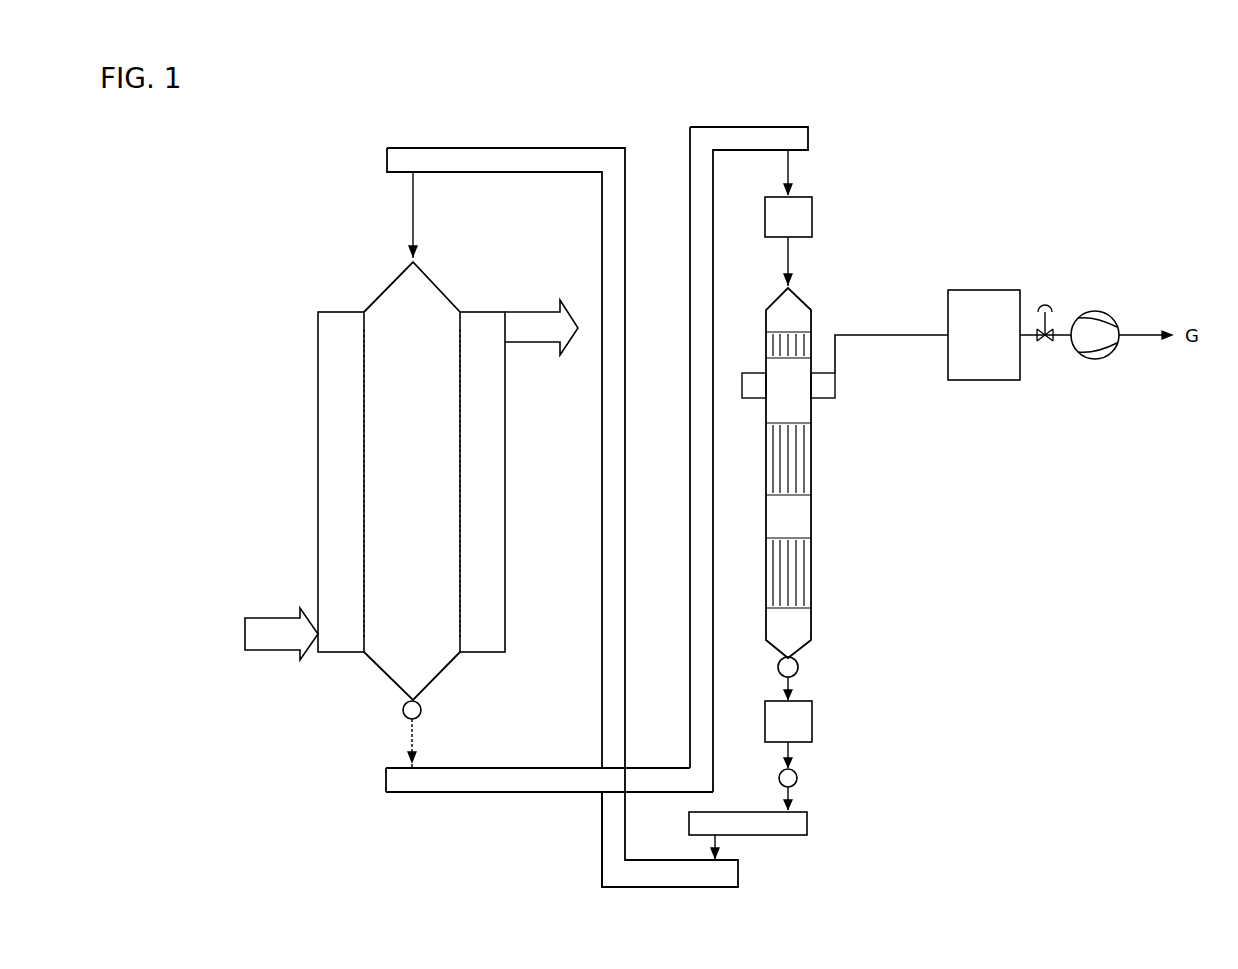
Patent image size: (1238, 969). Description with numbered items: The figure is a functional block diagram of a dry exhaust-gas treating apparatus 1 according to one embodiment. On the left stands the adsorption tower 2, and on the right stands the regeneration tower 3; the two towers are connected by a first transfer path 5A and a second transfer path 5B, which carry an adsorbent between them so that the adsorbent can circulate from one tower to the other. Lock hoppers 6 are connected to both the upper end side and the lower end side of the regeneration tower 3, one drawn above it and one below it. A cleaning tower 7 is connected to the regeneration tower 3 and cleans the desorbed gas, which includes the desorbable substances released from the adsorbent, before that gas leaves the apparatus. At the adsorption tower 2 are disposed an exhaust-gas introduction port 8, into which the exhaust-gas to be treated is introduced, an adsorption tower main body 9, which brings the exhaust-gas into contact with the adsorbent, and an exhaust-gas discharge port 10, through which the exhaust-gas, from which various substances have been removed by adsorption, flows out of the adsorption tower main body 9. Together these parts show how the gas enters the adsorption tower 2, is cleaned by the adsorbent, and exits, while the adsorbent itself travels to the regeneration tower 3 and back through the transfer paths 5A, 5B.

The dry exhaust-gas treating apparatus 1 is at (346, 126).
The adsorption tower 2 is at (294, 318).
The regeneration tower 3 is at (876, 496).
The first transfer path 5A is at (757, 128).
The second transfer path 5B is at (528, 158).
The lock hopper 6 is at (813, 217).
The cleaning tower 7 is at (985, 300).
The exhaust-gas introduction port 8 is at (316, 628).
The adsorption tower main body 9 is at (390, 458).
The exhaust-gas discharge port 10 is at (508, 330).